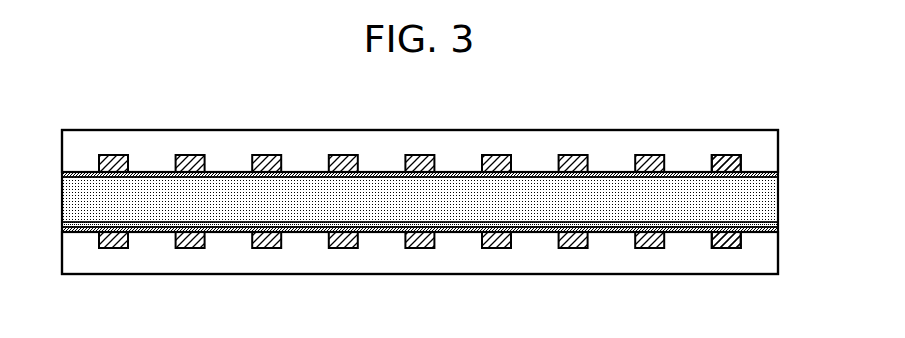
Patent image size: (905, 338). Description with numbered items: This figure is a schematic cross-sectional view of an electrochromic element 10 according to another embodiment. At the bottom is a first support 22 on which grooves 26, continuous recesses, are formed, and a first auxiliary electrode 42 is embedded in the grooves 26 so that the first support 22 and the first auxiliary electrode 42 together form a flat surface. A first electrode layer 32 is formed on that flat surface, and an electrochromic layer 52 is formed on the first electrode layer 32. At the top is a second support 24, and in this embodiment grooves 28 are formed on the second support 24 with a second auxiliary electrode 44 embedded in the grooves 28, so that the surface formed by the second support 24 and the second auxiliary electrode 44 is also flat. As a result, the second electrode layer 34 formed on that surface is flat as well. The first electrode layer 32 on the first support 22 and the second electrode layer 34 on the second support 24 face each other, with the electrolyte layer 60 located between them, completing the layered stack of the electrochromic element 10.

The electrochromic element 10 is at (414, 126).
The first support 22 is at (768, 265).
The second support 24 is at (768, 145).
The grooves 26 is at (712, 240).
The grooves 28 is at (712, 164).
The first electrode layer 32 is at (778, 229).
The second electrode layer 34 is at (778, 175).
The first auxiliary electrode 42 is at (728, 238).
The second auxiliary electrode 44 is at (724, 163).
The electrochromic layer 52 is at (778, 224).
The electrolyte layer 60 is at (73, 200).